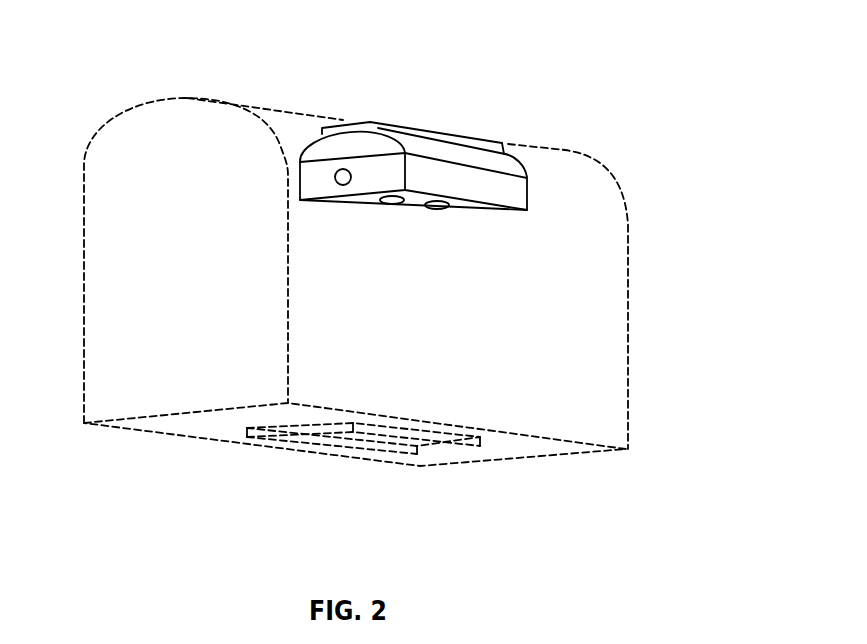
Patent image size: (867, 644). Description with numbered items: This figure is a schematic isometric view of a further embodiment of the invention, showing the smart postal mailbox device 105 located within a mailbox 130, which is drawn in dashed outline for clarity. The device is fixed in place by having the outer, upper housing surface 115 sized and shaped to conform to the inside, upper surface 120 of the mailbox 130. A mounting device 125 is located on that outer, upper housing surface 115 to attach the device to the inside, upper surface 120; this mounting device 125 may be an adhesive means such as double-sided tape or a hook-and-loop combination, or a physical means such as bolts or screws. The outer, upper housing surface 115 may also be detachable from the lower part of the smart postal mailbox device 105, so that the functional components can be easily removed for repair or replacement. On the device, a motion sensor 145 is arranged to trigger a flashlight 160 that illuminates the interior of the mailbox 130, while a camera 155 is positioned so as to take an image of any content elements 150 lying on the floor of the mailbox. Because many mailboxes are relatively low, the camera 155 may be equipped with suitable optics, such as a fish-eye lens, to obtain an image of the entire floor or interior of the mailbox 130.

The smart postal mailbox device 105 is at (529, 192).
The outer, upper housing surface 115 is at (504, 155).
The inside, upper surface 120 is at (278, 112).
The mounting device 125 is at (369, 122).
The mailbox 130 is at (208, 443).
The motion sensor 145 is at (335, 177).
The content elements 150 is at (417, 448).
The camera 155 is at (395, 205).
The flashlight 160 is at (435, 210).